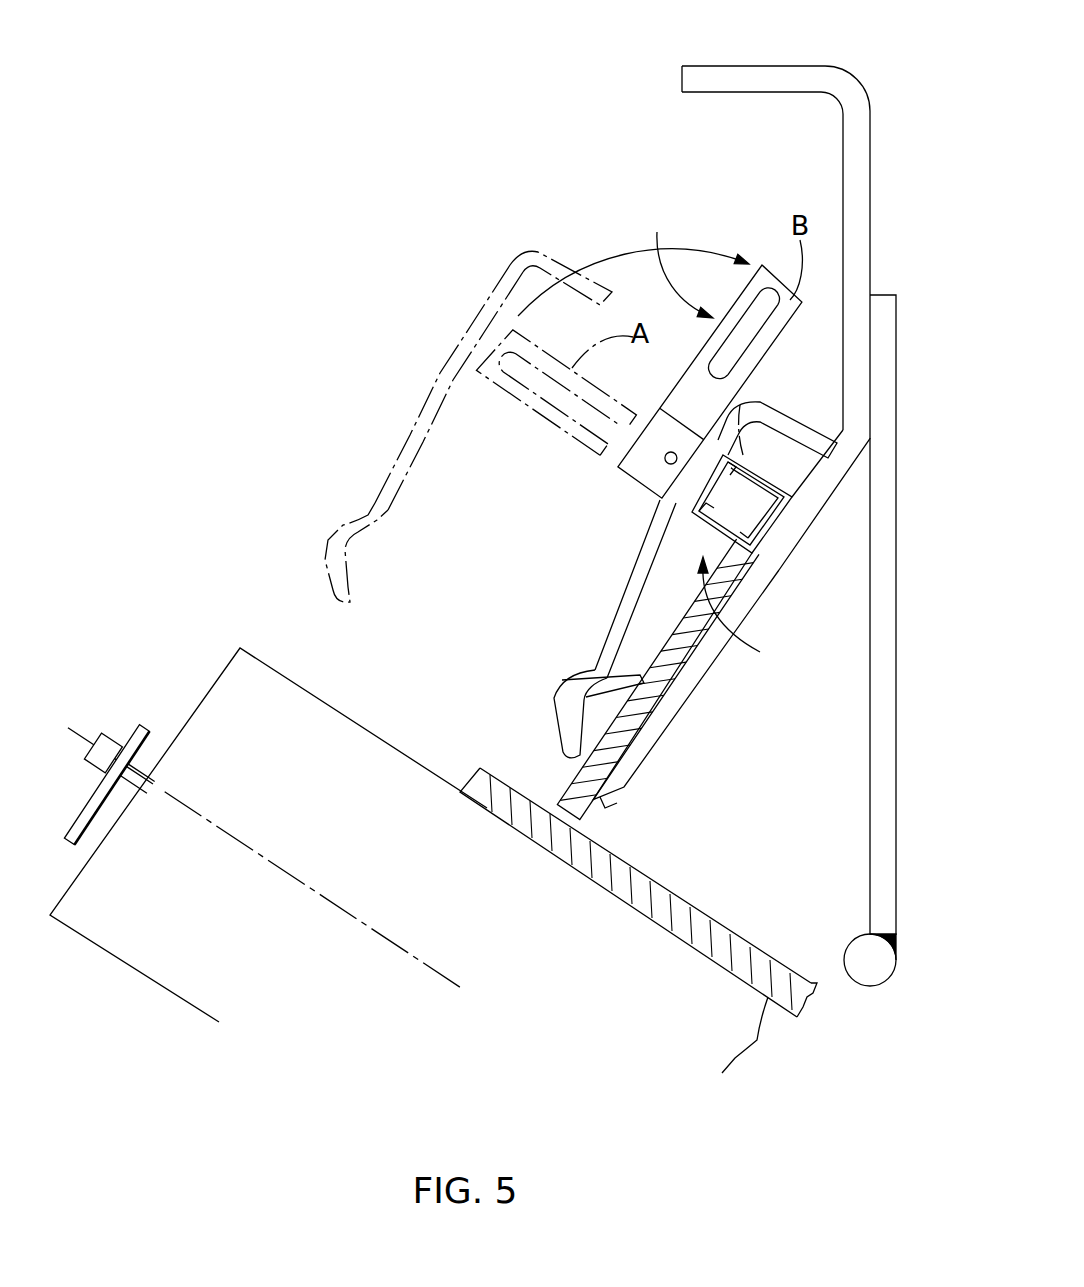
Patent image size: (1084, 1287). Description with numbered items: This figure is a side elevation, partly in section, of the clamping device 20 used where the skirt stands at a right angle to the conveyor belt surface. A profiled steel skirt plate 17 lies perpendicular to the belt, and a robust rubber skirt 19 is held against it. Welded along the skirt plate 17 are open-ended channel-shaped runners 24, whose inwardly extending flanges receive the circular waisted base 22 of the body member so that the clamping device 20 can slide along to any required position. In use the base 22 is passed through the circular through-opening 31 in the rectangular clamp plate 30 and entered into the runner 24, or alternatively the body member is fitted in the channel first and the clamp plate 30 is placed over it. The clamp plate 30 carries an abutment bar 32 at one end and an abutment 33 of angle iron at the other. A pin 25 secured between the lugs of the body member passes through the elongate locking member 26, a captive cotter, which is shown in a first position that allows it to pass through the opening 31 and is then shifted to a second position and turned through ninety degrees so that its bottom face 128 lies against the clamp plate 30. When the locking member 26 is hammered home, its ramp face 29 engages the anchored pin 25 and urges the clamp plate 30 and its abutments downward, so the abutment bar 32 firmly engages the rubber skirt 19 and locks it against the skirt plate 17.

The skirt plate 17 is at (625, 787).
The rubber skirt 19 is at (632, 725).
The clamping device 20 is at (745, 613).
The circular waisted base 22 is at (752, 522).
The channel-shaped runner 24 is at (783, 481).
The pin 25 is at (672, 464).
The locking member 26 is at (633, 258).
The ramp face 29 is at (722, 367).
The clamp plate 30 is at (622, 618).
The through-opening 31 is at (766, 400).
The abutment bar 32 is at (808, 432).
The abutment 33 is at (565, 732).
The bottom face 128 is at (783, 333).